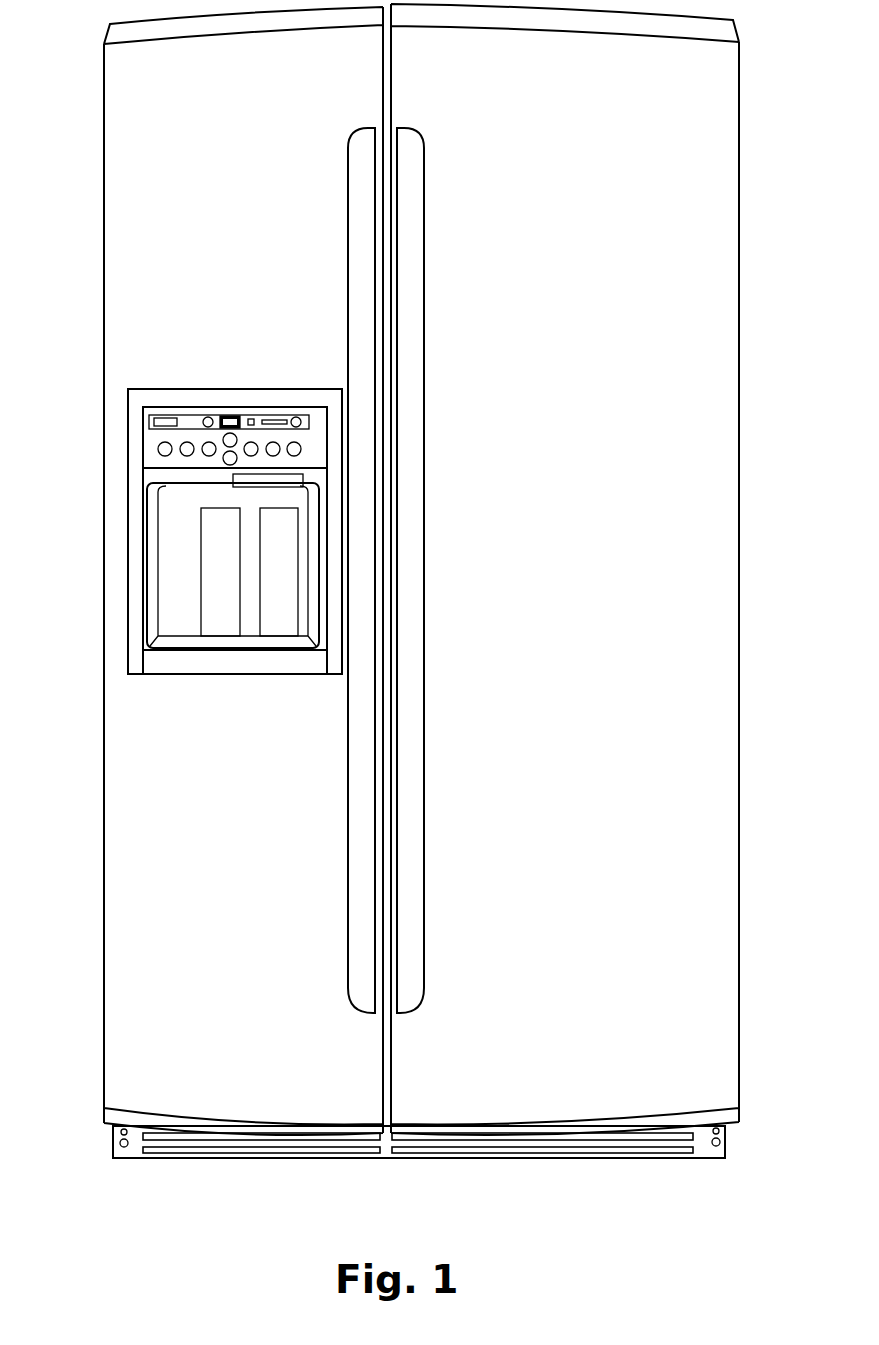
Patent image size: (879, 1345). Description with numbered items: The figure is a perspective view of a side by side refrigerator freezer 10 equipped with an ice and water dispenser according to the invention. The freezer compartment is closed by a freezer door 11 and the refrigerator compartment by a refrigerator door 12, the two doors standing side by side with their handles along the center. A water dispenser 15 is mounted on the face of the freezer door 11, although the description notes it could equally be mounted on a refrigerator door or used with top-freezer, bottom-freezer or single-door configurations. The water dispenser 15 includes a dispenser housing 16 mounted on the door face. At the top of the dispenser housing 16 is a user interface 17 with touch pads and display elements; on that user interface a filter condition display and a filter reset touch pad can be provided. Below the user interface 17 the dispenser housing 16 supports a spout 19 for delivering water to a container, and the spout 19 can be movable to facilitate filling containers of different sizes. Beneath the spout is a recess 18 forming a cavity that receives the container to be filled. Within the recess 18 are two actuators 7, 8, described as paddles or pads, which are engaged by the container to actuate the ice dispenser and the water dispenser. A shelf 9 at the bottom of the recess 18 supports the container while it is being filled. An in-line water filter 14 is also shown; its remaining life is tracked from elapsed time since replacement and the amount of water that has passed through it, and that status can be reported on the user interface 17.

The refrigerator freezer 10 is at (433, 628).
The freezer door 11 is at (124, 1043).
The refrigerator door 12 is at (708, 1047).
The water filter 14 is at (262, 1150).
The water dispenser 15 is at (311, 526).
The dispenser housing 16 is at (318, 486).
The user interface 17 is at (305, 437).
The spout 19 is at (303, 474).
The recess 18 is at (177, 605).
The actuator 7 is at (221, 607).
The actuator 8 is at (276, 607).
The shelf 9 is at (311, 661).